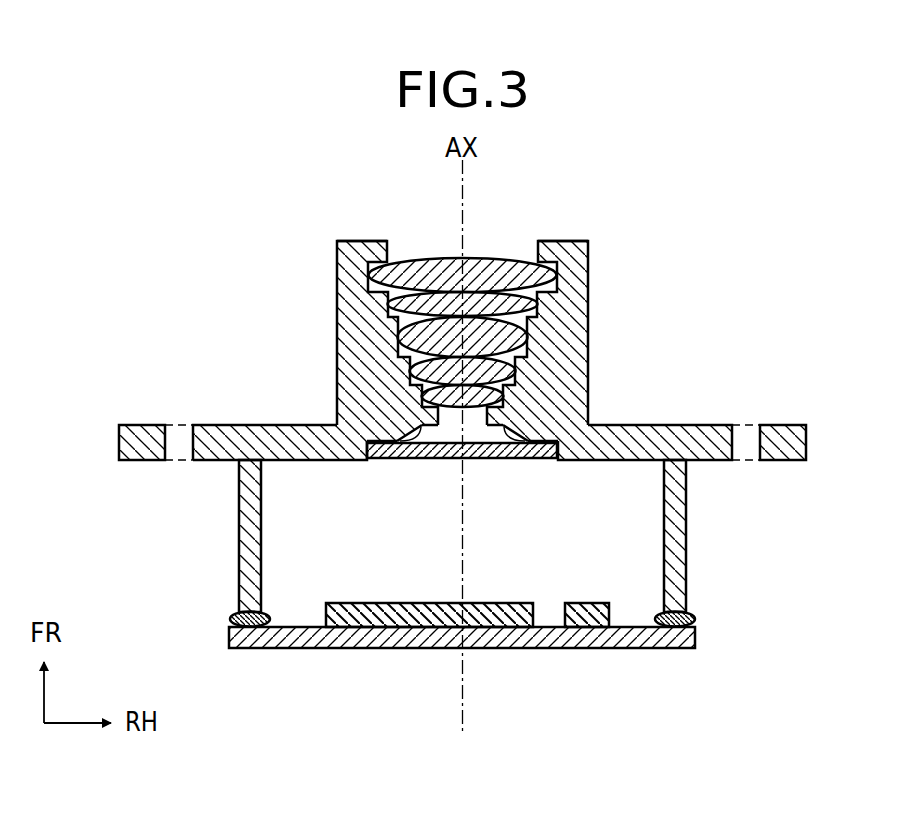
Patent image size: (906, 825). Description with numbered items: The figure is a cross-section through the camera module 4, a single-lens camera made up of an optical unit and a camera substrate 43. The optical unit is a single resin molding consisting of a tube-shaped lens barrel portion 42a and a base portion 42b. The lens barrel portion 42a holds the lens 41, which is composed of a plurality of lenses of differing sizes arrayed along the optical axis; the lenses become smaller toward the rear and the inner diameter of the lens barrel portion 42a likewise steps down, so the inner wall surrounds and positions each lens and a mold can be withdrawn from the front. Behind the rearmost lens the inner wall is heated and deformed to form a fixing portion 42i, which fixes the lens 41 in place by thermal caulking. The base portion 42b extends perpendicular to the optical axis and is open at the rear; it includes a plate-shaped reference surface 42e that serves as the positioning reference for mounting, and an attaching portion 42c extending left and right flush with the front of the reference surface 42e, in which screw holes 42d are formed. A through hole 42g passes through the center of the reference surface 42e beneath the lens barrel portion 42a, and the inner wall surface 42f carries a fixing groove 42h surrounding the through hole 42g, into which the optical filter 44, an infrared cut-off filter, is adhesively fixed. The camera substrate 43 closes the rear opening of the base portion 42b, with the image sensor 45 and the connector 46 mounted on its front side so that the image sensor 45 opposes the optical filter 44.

The camera module 4 is at (628, 247).
The lens 41 is at (557, 257).
The lens barrel portion 42a is at (338, 312).
The base portion 42b is at (699, 424).
The attaching portion 42c is at (213, 425).
The screw holes 42d is at (168, 442).
The reference surface 42e is at (271, 425).
The inner wall surface 42f is at (293, 461).
The through hole 42g is at (452, 428).
The fixing groove 42h is at (380, 460).
The fixing portion 42i is at (405, 436).
The camera substrate 43 is at (594, 648).
The optical filter 44 is at (487, 460).
The image sensor 45 is at (438, 603).
The connector 46 is at (592, 600).